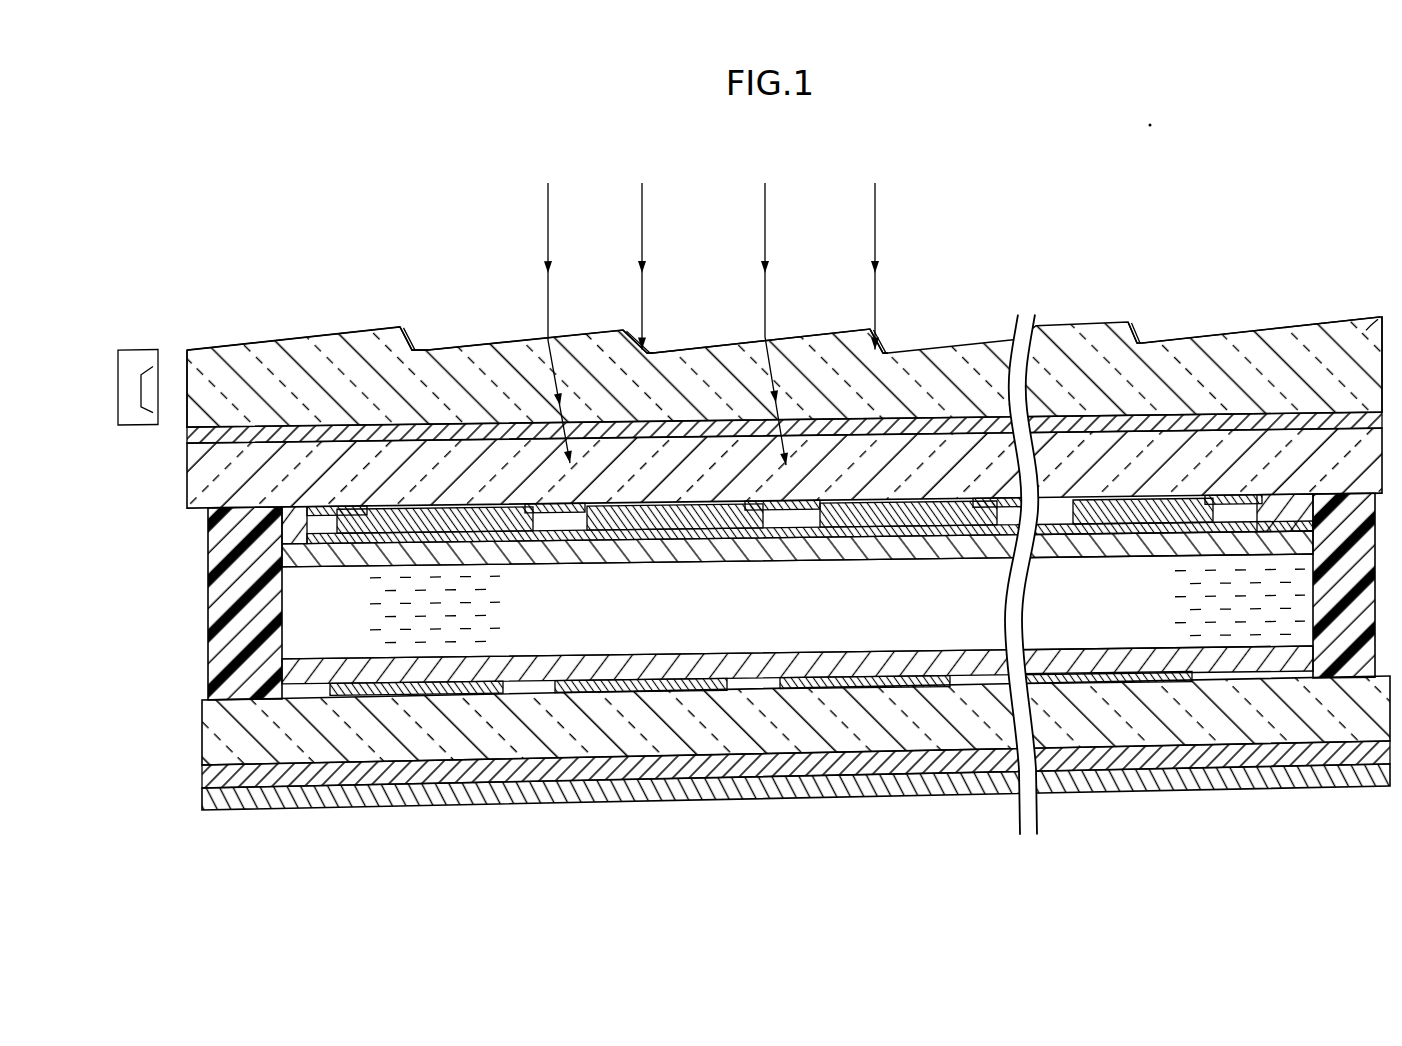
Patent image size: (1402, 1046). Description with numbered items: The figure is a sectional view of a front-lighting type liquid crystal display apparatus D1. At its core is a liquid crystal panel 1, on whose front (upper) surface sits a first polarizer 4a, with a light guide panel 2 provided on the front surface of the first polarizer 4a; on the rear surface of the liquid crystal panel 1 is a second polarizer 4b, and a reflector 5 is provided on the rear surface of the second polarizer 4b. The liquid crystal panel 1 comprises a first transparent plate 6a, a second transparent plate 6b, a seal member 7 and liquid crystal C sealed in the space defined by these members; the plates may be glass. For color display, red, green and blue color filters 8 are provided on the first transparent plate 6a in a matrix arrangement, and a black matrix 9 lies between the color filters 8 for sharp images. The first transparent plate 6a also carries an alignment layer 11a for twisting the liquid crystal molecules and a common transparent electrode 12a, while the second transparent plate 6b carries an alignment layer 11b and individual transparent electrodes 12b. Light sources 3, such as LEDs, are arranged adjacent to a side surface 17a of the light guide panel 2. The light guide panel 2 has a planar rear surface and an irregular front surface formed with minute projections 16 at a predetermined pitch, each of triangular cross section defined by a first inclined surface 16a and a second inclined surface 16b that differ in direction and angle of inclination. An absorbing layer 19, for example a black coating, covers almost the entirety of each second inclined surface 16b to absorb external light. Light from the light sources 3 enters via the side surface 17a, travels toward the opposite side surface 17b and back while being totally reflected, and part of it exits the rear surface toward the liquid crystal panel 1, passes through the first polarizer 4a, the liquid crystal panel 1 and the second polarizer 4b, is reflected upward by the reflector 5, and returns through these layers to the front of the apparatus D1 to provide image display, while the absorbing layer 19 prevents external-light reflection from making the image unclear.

The liquid crystal panel 1 is at (122, 607).
The light guide panel 2 is at (281, 351).
The light sources 3 is at (140, 349).
The first polarizer 4a is at (187, 438).
The second polarizer 4b is at (200, 775).
The reflector 5 is at (200, 803).
The first transparent plate 6a is at (200, 485).
The second transparent plate 6b is at (210, 730).
The seal member 7 is at (217, 585).
The color filters 8 is at (452, 536).
The black matrix 9 is at (335, 522).
The alignment layer 11a is at (297, 558).
The alignment layer 11b is at (305, 683).
The common transparent electrode 12a is at (290, 519).
The individual transparent electrodes 12b is at (405, 698).
The projections 16 is at (397, 332).
The first inclined surface 16a is at (363, 325).
The second inclined surface 16b is at (425, 356).
The side surface 17a is at (187, 350).
The opposite side surface 17b is at (1378, 332).
The absorbing layer 19 is at (408, 352).
The liquid crystal C is at (305, 645).
The liquid crystal display apparatus D1 is at (987, 250).